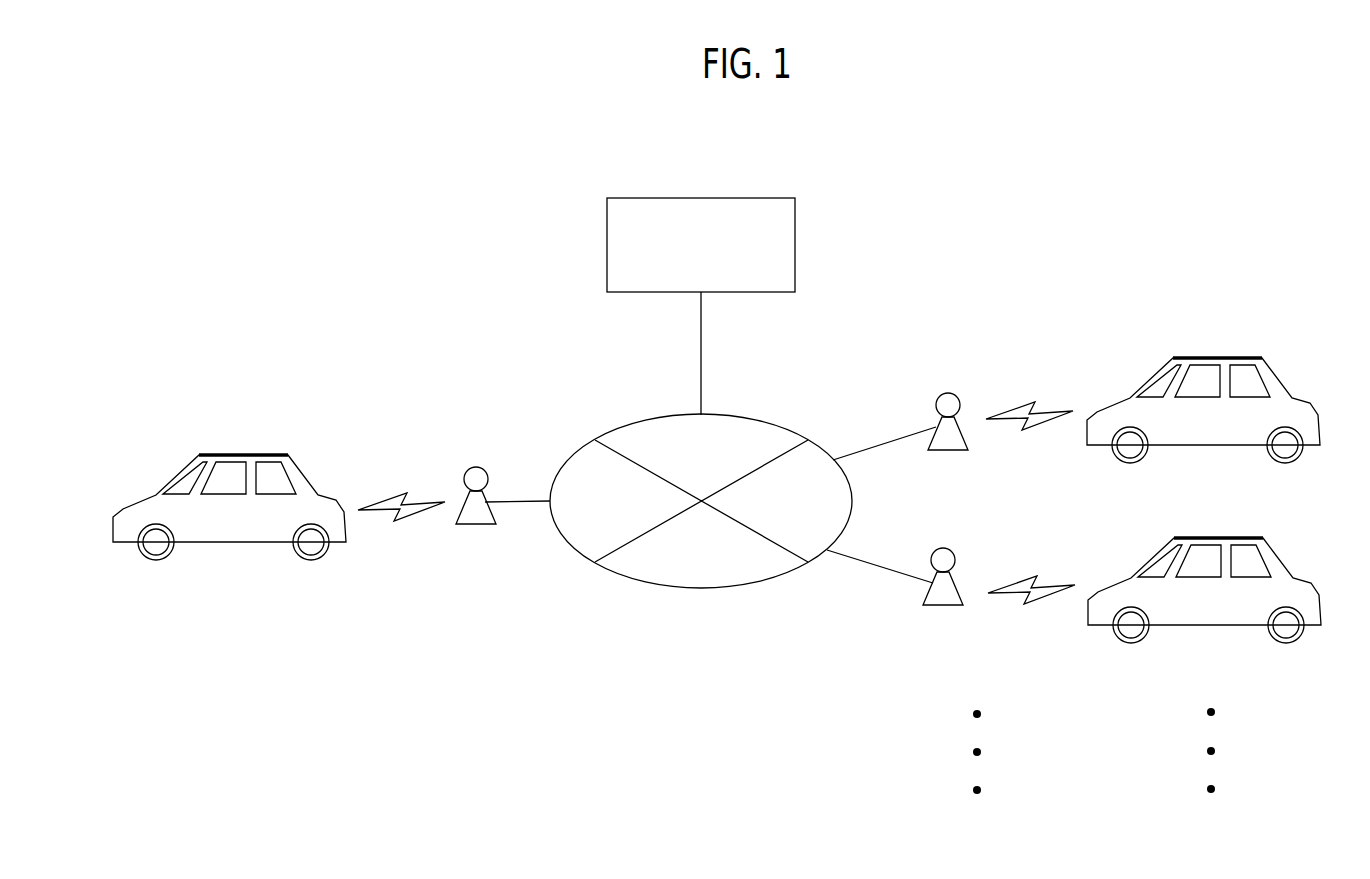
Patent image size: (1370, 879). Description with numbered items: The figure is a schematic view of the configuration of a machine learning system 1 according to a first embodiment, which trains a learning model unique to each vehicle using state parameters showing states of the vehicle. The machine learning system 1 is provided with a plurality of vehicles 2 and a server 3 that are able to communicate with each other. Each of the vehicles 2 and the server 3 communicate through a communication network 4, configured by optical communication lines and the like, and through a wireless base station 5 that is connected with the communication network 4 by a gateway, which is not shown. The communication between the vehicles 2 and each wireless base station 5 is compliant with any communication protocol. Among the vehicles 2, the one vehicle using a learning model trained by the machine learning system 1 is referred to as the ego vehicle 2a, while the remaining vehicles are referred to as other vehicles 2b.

The machine learning system 1 is at (605, 710).
The vehicle 2 is at (718, 494).
The ego vehicle 2a is at (227, 453).
The other vehicle 2b is at (1243, 357).
The server 3 is at (795, 242).
The communication network 4 is at (775, 423).
The wireless base station 5 is at (480, 525).